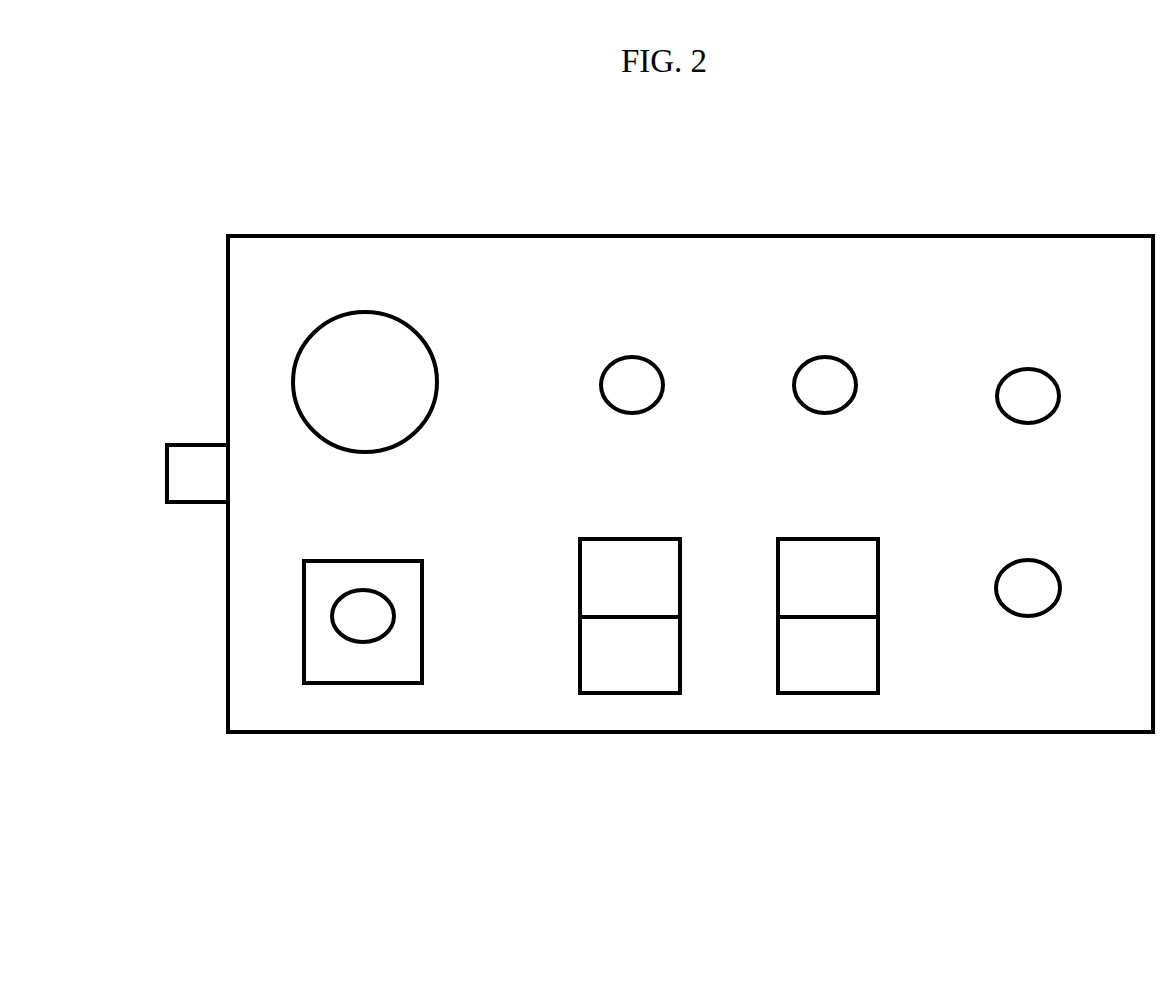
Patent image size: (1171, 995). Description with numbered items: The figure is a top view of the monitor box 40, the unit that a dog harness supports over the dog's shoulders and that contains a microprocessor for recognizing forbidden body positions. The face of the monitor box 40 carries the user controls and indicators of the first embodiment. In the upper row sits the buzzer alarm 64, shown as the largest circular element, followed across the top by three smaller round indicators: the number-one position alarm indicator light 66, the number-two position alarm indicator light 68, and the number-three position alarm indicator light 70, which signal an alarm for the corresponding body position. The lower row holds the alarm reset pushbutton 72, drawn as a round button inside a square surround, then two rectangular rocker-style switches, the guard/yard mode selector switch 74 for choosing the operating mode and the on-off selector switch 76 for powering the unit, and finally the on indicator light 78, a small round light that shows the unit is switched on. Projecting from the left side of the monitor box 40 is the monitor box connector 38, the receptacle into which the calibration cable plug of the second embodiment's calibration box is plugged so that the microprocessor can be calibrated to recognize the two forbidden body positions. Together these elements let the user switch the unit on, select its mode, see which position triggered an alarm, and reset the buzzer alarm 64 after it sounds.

The monitor box connector 38 is at (189, 467).
The monitor box 40 is at (272, 245).
The buzzer alarm 64 is at (366, 362).
The #1 position alarm indicator light 66 is at (628, 378).
The #2 position alarm indicator light 68 is at (827, 378).
The #3 position alarm indicator light 70 is at (1030, 383).
The alarm reset pushbutton 72 is at (360, 628).
The guard/yard mode selector switch 74 is at (625, 683).
The on-off selector switch 76 is at (816, 657).
The on indicator light 78 is at (1026, 597).